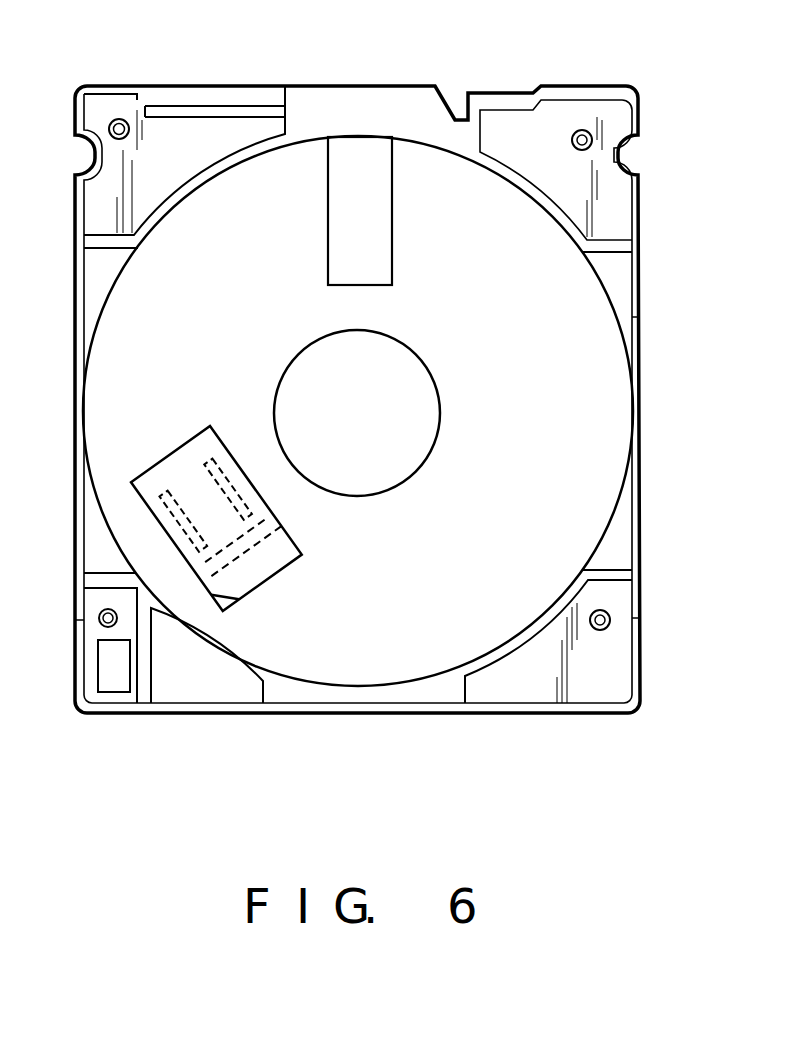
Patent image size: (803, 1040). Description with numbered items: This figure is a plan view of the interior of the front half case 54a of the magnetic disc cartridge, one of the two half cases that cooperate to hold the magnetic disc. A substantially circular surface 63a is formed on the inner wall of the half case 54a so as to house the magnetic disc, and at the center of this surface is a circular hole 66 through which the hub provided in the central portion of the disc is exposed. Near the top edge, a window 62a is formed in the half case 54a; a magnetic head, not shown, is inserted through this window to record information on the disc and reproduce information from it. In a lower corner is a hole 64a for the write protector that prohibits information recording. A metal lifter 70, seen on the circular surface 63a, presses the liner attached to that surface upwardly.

The window 62a is at (353, 143).
The front half case 54a is at (543, 108).
The circular hole 66 is at (435, 420).
The substantially circular surface 63a is at (608, 487).
The hole for the write protector 64a is at (117, 682).
The metal lifter 70 is at (245, 583).